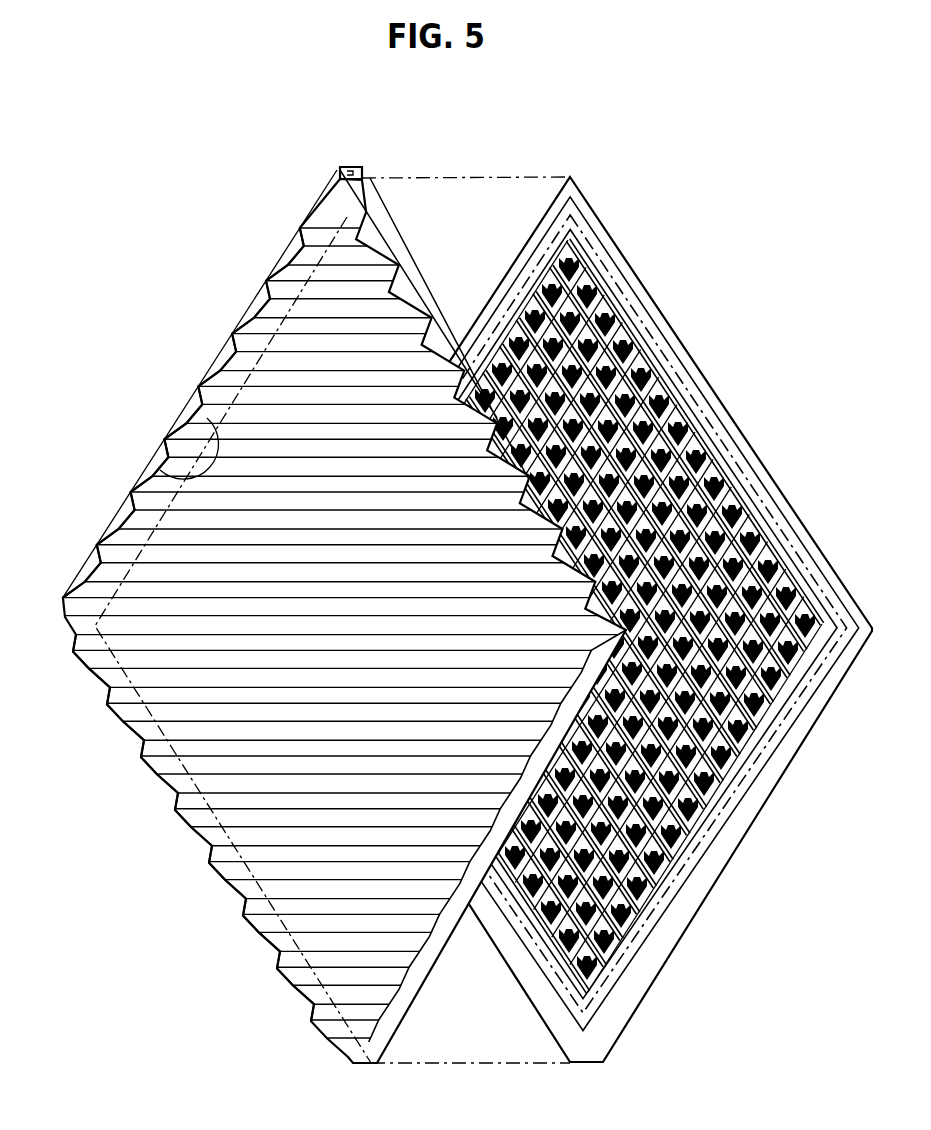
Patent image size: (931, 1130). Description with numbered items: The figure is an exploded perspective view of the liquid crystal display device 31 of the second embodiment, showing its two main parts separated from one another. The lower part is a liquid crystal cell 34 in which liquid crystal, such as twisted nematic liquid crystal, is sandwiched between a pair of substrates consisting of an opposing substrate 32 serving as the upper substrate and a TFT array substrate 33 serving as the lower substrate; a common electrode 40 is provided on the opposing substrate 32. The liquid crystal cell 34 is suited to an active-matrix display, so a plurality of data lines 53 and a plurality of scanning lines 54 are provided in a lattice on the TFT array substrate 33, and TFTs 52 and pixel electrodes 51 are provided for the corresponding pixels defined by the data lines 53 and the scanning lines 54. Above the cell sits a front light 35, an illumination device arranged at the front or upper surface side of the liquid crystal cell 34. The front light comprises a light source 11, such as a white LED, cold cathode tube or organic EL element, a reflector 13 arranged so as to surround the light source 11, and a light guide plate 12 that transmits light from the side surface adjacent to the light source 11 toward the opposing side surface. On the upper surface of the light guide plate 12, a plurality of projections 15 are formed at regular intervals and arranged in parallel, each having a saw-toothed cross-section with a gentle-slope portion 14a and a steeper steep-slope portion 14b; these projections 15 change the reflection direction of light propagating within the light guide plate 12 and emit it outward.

The light source 11 is at (351, 167).
The light guide plate 12 is at (195, 787).
The reflector 13 is at (325, 208).
The gentle-slope portion 14a is at (163, 457).
The steep-slope portion 14b is at (200, 412).
The projections 15 is at (58, 686).
The liquid crystal display device 31 is at (328, 583).
The opposing substrate 32 is at (533, 212).
The TFT array substrate 33 is at (613, 225).
The liquid crystal cell 34 is at (578, 592).
The front light 35 is at (143, 258).
The common electrode 40 is at (663, 320).
The pixel electrodes 51 is at (694, 815).
The TFTs 52 is at (599, 614).
The data lines 53 is at (544, 287).
The scanning lines 54 is at (780, 543).